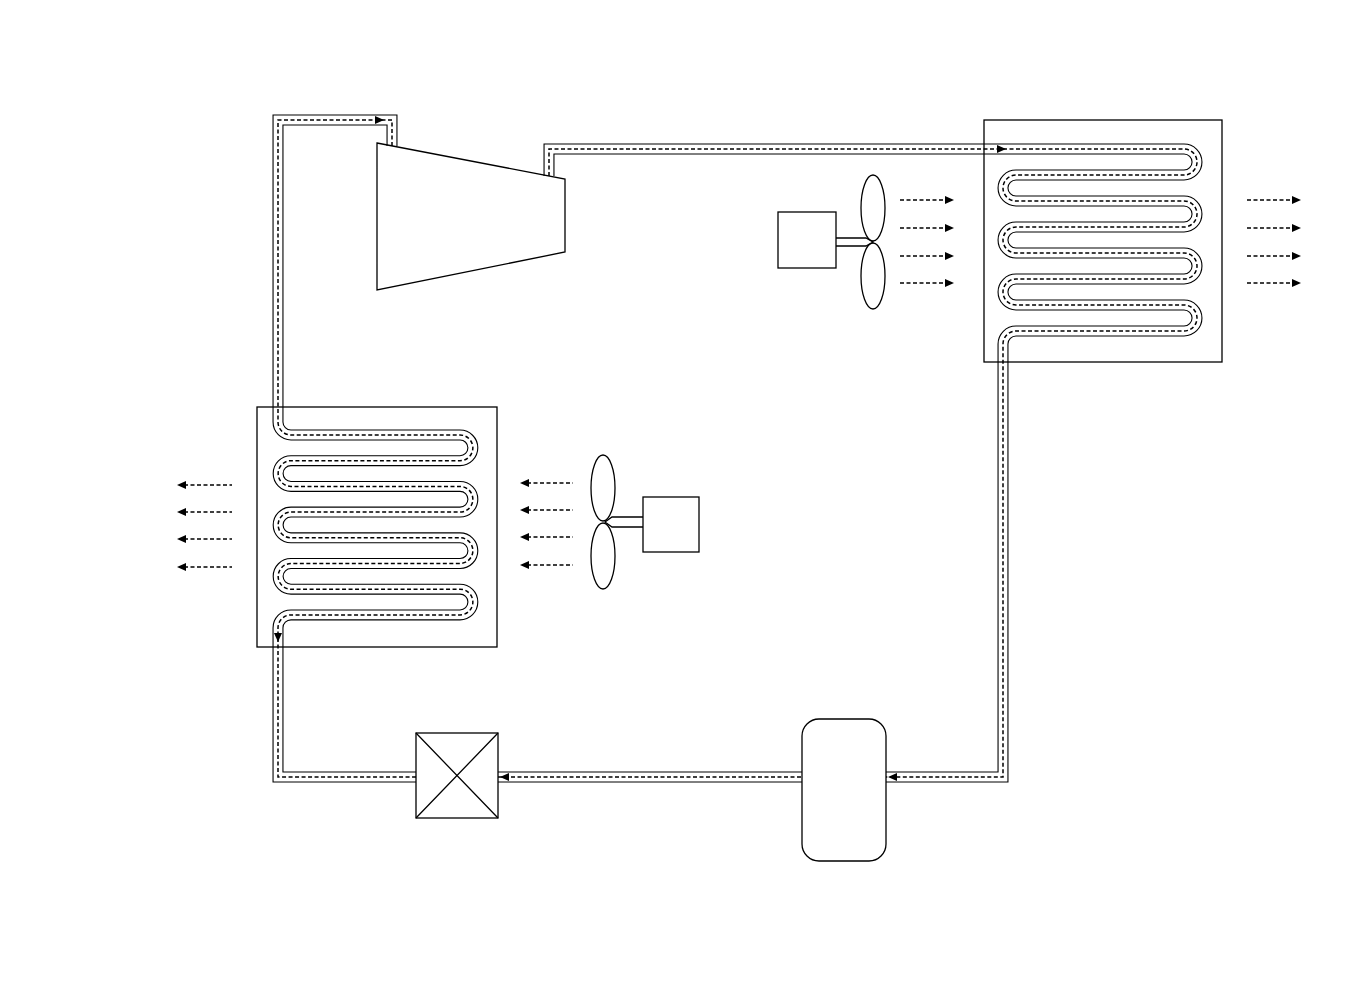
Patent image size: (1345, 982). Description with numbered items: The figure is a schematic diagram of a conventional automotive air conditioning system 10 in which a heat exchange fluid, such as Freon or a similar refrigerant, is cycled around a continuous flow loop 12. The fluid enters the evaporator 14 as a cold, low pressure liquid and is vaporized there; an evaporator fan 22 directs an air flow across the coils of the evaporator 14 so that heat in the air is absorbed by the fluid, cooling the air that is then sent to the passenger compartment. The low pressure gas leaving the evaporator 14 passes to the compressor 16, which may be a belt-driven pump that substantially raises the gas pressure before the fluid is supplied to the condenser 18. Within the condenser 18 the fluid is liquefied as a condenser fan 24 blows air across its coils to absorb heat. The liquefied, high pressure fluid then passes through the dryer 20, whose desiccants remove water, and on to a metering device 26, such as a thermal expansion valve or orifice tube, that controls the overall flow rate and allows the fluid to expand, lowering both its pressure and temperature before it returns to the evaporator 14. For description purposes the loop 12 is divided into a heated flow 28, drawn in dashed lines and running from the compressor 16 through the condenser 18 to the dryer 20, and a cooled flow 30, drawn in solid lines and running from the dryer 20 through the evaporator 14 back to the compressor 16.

The air conditioning system 10 is at (208, 165).
The continuous flow loop 12 is at (273, 323).
The evaporator 14 is at (400, 407).
The compressor 16 is at (475, 224).
The condenser 18 is at (1137, 120).
The dryer 20 is at (886, 818).
The evaporator fan 22 is at (668, 497).
The condenser fan 24 is at (778, 240).
The metering device 26 is at (416, 798).
The heated flow 28 is at (795, 140).
The cooled flow 30 is at (326, 113).